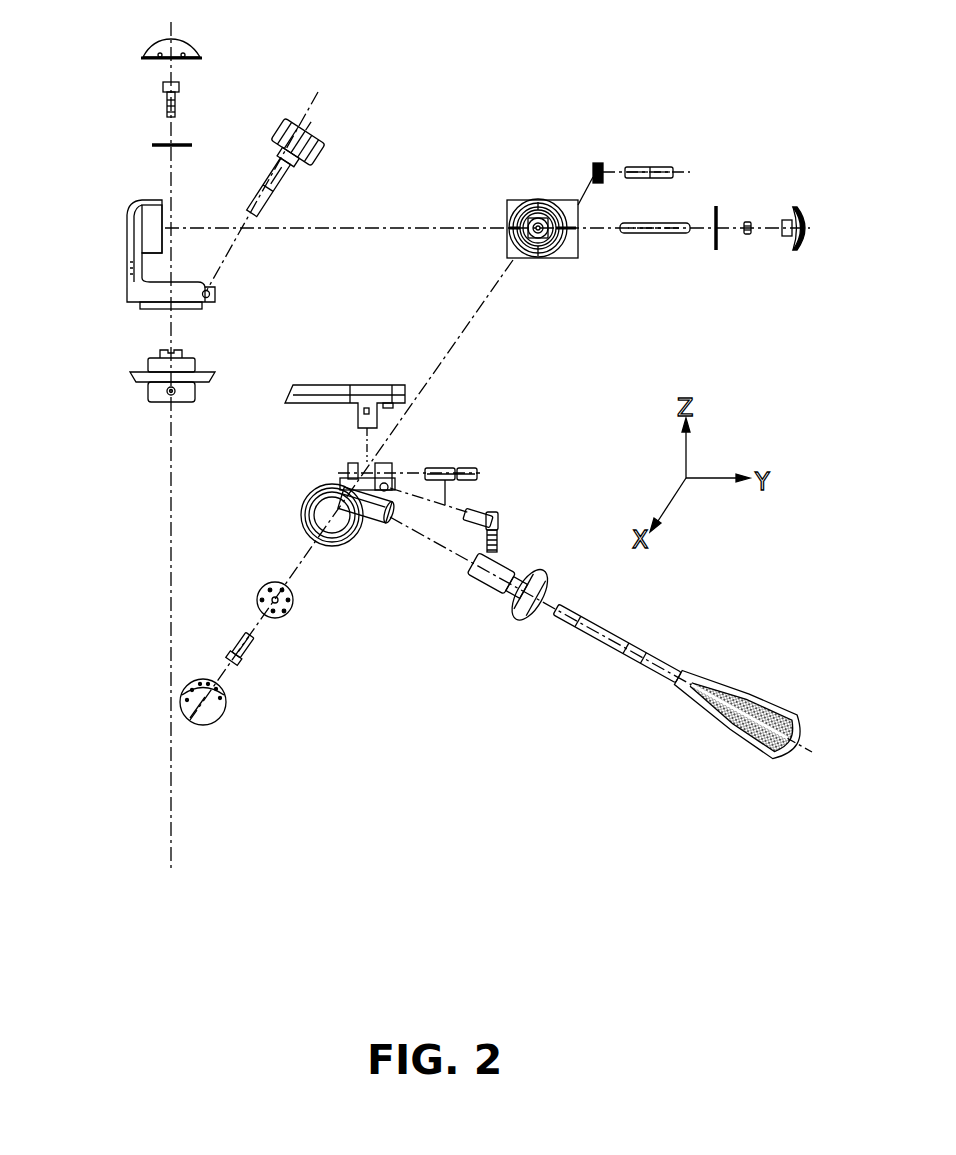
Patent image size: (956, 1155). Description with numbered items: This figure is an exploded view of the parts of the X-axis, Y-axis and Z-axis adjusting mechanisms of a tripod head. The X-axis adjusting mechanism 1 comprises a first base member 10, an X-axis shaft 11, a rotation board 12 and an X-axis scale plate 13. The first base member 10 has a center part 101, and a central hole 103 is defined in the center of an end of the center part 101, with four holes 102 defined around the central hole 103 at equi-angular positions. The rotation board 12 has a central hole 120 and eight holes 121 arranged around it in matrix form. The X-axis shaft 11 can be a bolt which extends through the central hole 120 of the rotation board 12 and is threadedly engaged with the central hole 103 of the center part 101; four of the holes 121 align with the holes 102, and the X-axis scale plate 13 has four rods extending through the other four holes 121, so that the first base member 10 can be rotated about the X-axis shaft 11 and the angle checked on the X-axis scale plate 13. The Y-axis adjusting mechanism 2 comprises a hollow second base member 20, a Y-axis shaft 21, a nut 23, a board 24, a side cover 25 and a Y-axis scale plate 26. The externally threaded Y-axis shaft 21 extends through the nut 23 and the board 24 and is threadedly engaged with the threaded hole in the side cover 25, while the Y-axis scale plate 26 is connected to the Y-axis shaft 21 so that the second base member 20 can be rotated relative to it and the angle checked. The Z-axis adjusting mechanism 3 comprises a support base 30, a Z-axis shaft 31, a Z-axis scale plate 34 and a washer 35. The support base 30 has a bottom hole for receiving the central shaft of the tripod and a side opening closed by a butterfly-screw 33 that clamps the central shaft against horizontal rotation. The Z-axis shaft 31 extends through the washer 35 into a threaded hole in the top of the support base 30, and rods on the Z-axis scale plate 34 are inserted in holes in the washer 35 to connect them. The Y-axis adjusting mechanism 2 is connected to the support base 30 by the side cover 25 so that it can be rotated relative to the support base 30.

The X-axis adjusting mechanism 1 is at (235, 578).
The Y-axis adjusting mechanism 2 is at (688, 205).
The Z-axis adjusting mechanism 3 is at (100, 258).
The first base member 10 is at (552, 195).
The center part 101 is at (541, 258).
The holes 102 is at (549, 257).
The central hole 103 is at (528, 212).
The X-axis shaft 11 is at (248, 652).
The rotation board 12 is at (283, 614).
The central hole 120 is at (268, 592).
The holes 121 is at (288, 603).
The X-axis scale plate 13 is at (226, 712).
The second base member 20 is at (370, 545).
The Y-axis shaft 21 is at (657, 236).
The nut 23 is at (747, 236).
The board 24 is at (716, 252).
The side cover 25 is at (133, 232).
The Y-axis scale plate 26 is at (795, 206).
The support base 30 is at (150, 364).
The Z-axis shaft 31 is at (178, 106).
The butterfly-screw 33 is at (300, 138).
The Z-axis scale plate 34 is at (185, 50).
The washer 35 is at (186, 143).